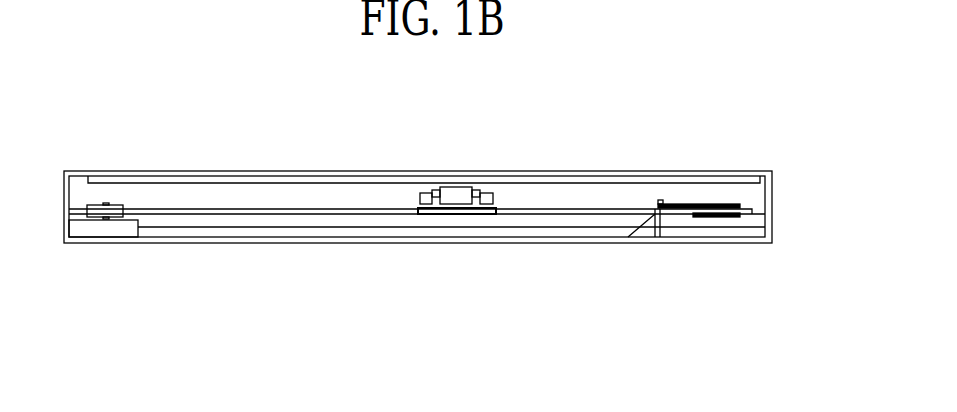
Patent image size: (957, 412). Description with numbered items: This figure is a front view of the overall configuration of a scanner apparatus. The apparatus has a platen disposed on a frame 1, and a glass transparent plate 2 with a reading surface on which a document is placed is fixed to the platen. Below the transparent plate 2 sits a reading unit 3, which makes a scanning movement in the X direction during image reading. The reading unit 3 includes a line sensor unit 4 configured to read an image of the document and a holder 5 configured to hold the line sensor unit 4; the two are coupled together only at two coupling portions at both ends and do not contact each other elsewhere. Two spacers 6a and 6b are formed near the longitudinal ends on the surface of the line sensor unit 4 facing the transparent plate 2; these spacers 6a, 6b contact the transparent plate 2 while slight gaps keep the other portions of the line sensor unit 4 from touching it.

The frame 1 is at (188, 243).
The transparent plate 2 is at (572, 181).
The reading unit 3 is at (447, 240).
The line sensor unit 4 is at (465, 198).
The holder 5 is at (435, 197).
The spacer 6a is at (452, 188).
The spacer 6b is at (476, 159).